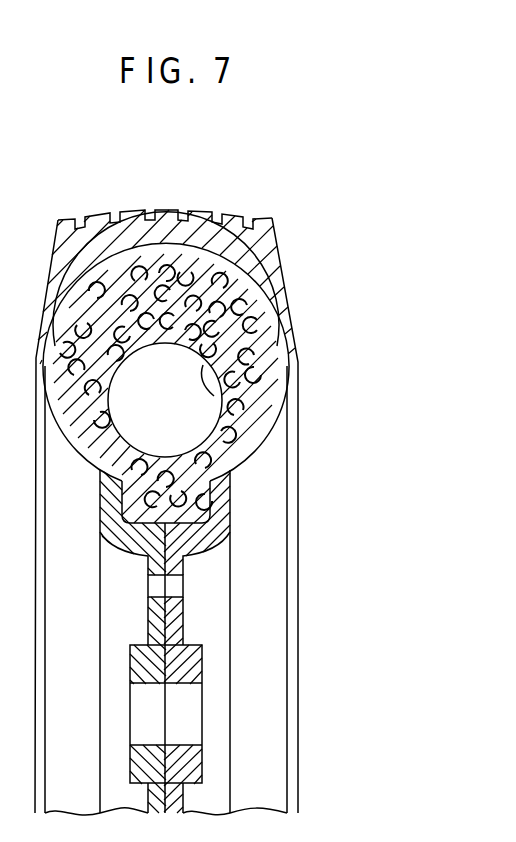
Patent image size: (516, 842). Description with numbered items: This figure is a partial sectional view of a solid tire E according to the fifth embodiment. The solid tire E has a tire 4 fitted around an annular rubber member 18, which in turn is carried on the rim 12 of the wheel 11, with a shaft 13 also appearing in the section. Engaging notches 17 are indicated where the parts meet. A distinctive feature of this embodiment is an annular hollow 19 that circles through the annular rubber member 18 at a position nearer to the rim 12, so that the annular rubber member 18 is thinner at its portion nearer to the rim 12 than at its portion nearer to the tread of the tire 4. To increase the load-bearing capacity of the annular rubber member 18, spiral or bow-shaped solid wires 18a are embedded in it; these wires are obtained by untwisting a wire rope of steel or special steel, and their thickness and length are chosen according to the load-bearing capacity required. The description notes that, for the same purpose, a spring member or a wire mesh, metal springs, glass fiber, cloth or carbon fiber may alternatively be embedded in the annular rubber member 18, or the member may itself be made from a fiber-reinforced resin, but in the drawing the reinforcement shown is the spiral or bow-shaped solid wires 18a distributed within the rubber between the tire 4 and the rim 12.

The tire 4 is at (268, 260).
The engaging notches 17 is at (168, 222).
The solid tire E is at (284, 206).
The annular rubber member 18 is at (262, 394).
The spiral or bow-shaped solid wires 18a is at (255, 317).
The annular hollow 19 is at (257, 425).
The rim 12 is at (177, 538).
The shaft 13 is at (175, 578).
The wheel 11 is at (192, 657).